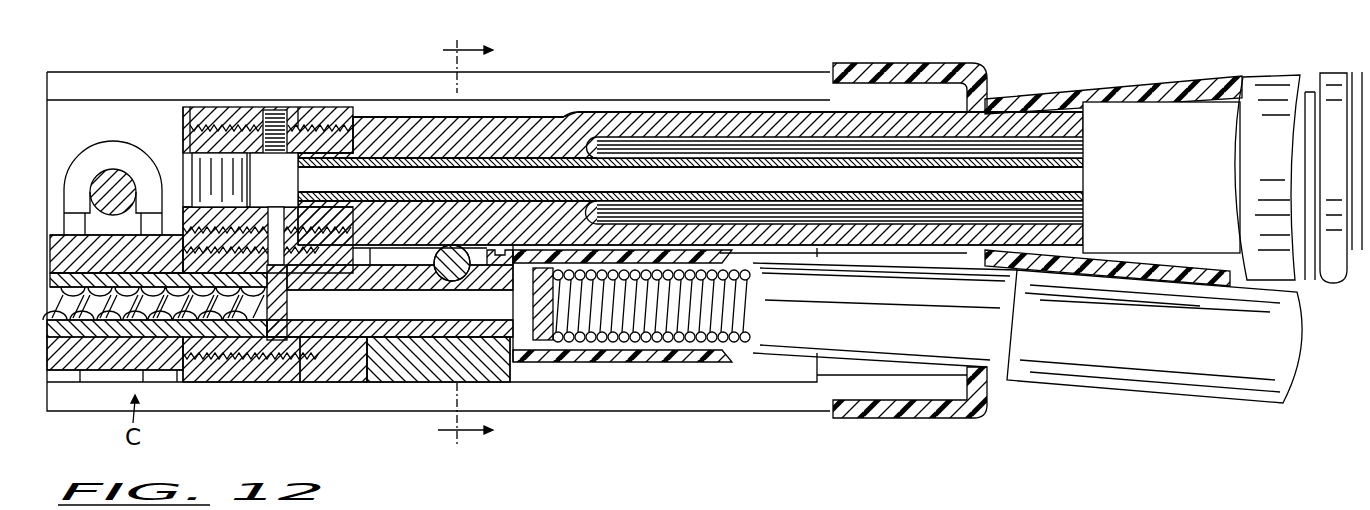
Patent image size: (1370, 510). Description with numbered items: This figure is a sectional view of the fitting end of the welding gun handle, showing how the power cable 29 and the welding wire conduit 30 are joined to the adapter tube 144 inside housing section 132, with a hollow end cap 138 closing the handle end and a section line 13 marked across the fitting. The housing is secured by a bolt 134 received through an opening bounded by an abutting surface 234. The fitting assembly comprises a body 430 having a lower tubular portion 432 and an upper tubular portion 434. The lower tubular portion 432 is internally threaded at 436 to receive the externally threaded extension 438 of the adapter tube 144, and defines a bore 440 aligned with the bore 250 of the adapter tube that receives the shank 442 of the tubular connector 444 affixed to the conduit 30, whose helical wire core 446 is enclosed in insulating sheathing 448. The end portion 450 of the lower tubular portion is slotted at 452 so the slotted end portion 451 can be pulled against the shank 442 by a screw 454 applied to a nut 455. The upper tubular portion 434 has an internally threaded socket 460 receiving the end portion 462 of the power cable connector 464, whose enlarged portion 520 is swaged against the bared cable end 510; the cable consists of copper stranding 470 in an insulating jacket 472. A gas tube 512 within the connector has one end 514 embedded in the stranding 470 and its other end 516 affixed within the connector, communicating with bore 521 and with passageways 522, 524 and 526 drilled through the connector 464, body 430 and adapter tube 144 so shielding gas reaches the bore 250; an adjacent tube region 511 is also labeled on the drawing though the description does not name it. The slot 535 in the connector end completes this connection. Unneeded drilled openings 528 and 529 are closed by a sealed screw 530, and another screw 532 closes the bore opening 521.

The housing section 132 is at (187, 78).
The bolt 134 is at (112, 188).
The adapter tube 144 is at (78, 252).
The abutting surface 234 is at (123, 160).
The opening 528 is at (285, 115).
The opening 529 is at (312, 135).
The screw 530 is at (266, 150).
The screw 532 is at (207, 163).
The bore 521 is at (262, 152).
The passageway 522 is at (298, 205).
The passageway 524 is at (303, 230).
The passageway 526 is at (277, 262).
The slot 535 is at (278, 327).
The upper tubular portion 434 is at (336, 132).
The internally threaded socket 460 is at (400, 140).
The end portion 462 is at (443, 140).
The power cable connector 464 is at (652, 128).
The gas tube end 516 is at (478, 163).
The gas tube end 514 is at (1042, 162).
The tube end 511 is at (770, 153).
The gas tube 512 is at (1040, 197).
The enlarged portion 520 is at (864, 125).
The tubular connector 444 is at (400, 277).
The slot 452 is at (494, 262).
The slotted end portion 451 is at (505, 250).
The screw 454 is at (450, 268).
The nut 455 is at (467, 267).
The bore 250 is at (90, 333).
The externally threaded extension 438 is at (200, 337).
The internal threading 436 is at (223, 350).
The body 430 is at (297, 377).
The lower tubular portion 432 is at (365, 367).
The bore 440 is at (430, 333).
The shank 442 is at (477, 333).
The helical wire core 446 is at (643, 337).
The insulating sheathing 448 is at (927, 347).
The end portion 450 is at (513, 363).
The hollow end cap 138 is at (982, 93).
The copper stranding 470 is at (1018, 143).
The insulating jacket 472 is at (1193, 122).
The power cable end 510 is at (1136, 112).
The power cable 29 is at (1278, 95).
The welding wire conduit 30 is at (1115, 375).
The section line 13 is at (464, 237).